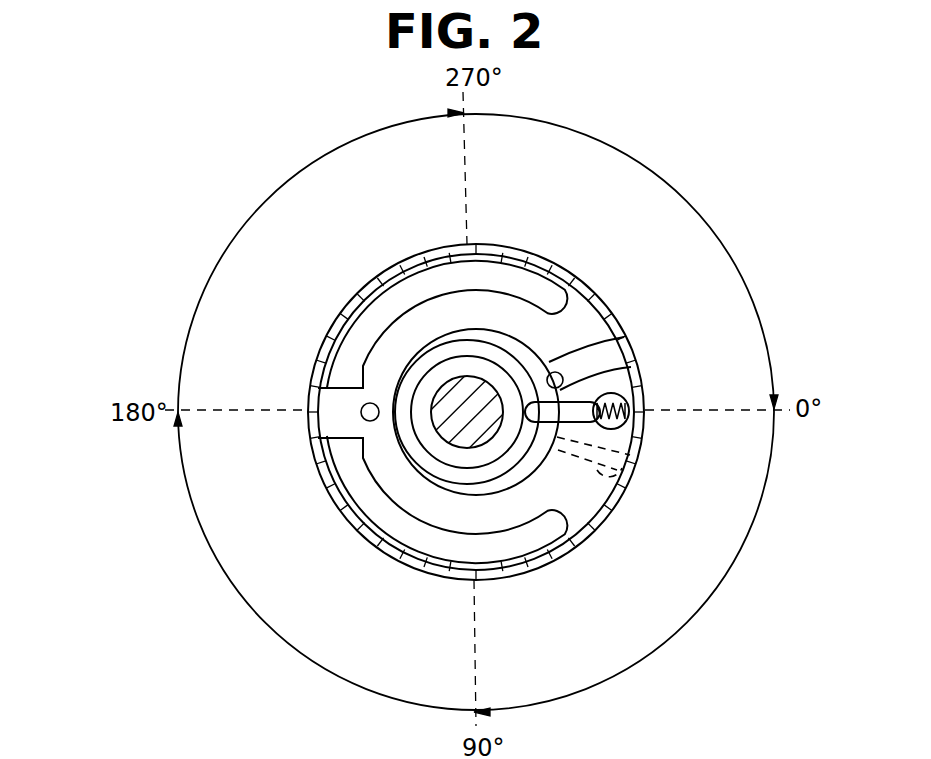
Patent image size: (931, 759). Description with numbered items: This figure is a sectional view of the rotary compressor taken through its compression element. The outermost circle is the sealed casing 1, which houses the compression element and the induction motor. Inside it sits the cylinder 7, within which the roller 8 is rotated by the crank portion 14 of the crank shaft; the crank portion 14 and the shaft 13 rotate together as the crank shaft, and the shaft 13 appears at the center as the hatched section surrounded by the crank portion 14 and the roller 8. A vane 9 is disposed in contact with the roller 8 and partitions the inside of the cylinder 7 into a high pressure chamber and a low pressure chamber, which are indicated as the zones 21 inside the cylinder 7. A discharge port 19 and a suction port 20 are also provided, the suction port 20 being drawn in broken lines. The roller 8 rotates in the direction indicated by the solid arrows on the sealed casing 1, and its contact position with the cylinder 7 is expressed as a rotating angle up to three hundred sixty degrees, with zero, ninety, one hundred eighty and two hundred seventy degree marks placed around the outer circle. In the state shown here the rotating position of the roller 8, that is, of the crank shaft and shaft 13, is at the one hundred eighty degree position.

The sealed casing 1 is at (353, 299).
The cylinder 7 is at (398, 463).
The roller 8 is at (430, 362).
The vane 9 is at (637, 372).
The shaft 13 is at (472, 432).
The crank portion 14 is at (432, 446).
The discharge port 19 is at (616, 338).
The suction port 20 is at (598, 463).
The high pressure chamber and low pressure chamber zones 21 is at (530, 366).